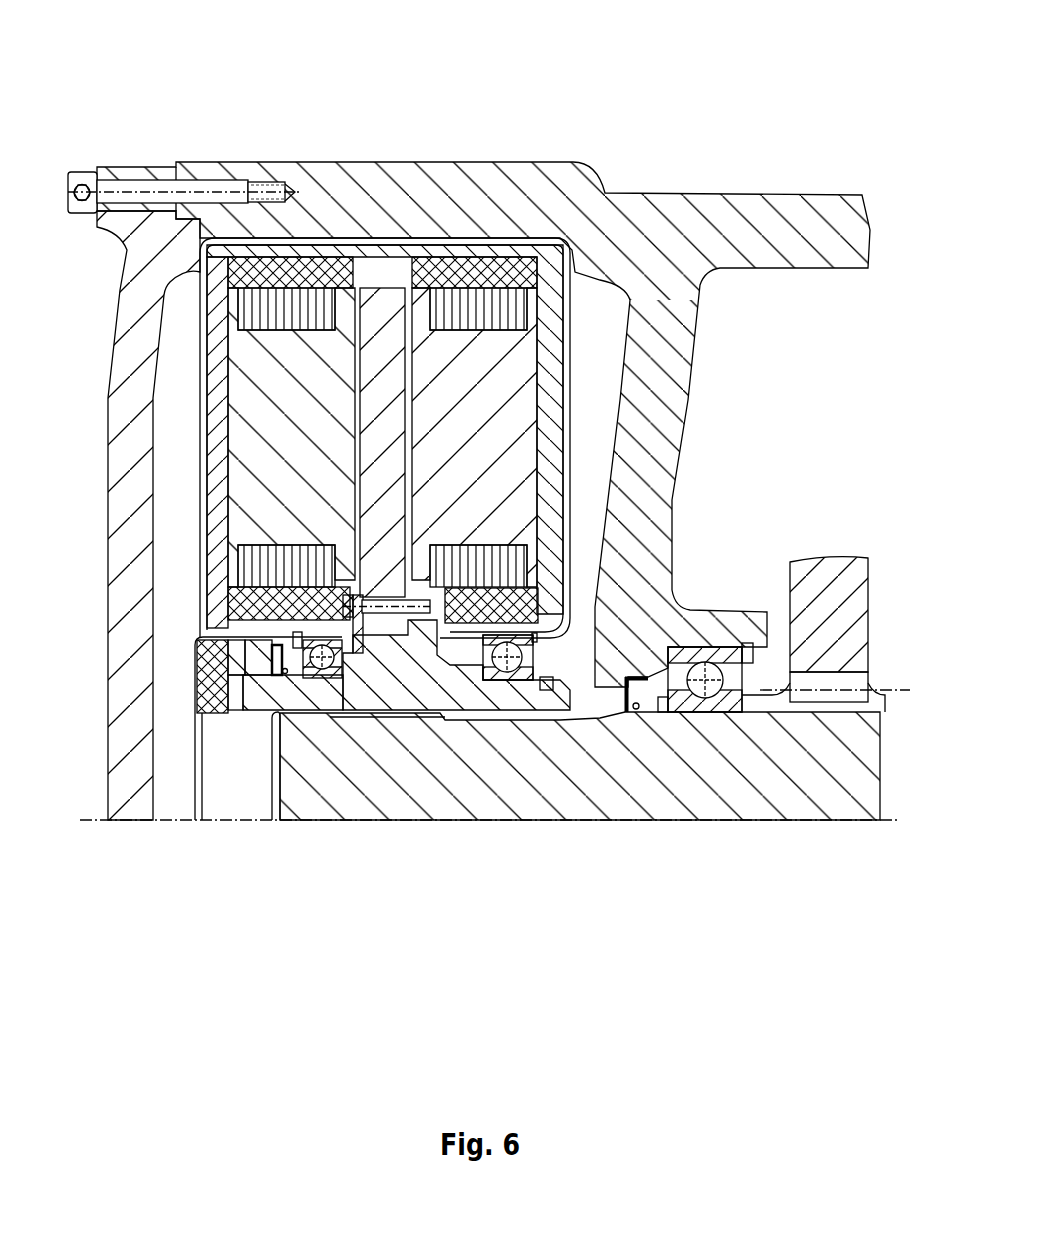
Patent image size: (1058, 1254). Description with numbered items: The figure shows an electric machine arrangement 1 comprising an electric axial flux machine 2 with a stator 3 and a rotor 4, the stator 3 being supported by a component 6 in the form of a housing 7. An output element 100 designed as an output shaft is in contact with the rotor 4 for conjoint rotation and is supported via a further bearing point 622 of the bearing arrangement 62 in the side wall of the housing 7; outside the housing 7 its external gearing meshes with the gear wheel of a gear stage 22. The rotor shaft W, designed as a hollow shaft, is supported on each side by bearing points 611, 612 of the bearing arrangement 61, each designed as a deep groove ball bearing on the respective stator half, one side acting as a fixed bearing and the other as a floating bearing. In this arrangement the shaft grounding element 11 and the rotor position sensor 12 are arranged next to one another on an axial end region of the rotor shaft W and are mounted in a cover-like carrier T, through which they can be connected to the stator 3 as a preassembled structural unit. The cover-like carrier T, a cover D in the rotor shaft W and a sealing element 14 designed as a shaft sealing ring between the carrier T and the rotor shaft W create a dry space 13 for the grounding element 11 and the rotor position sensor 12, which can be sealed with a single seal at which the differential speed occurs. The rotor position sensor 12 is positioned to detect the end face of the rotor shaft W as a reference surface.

The electric machine arrangement 1 is at (501, 513).
The electric axial flux machine 2 is at (469, 469).
The stator 3 is at (314, 260).
The rotor 4 is at (379, 280).
The component supporting the stator 6 is at (483, 403).
The housing 7 is at (677, 230).
The shaft grounding element 11 is at (253, 665).
The rotor position sensor 12 is at (218, 730).
The dry space 13 is at (233, 668).
The sealing element 14 is at (285, 640).
The gear stage 22 is at (813, 590).
The bearing arrangement 61 is at (405, 760).
The bearing point 611 is at (320, 697).
The bearing point 612 is at (514, 695).
The bearing arrangement 62 is at (702, 787).
The further bearing point 622 is at (712, 734).
The output element 100 is at (802, 768).
The cover-like carrier T is at (198, 736).
The rotor shaft W is at (418, 687).
The cover D is at (277, 787).